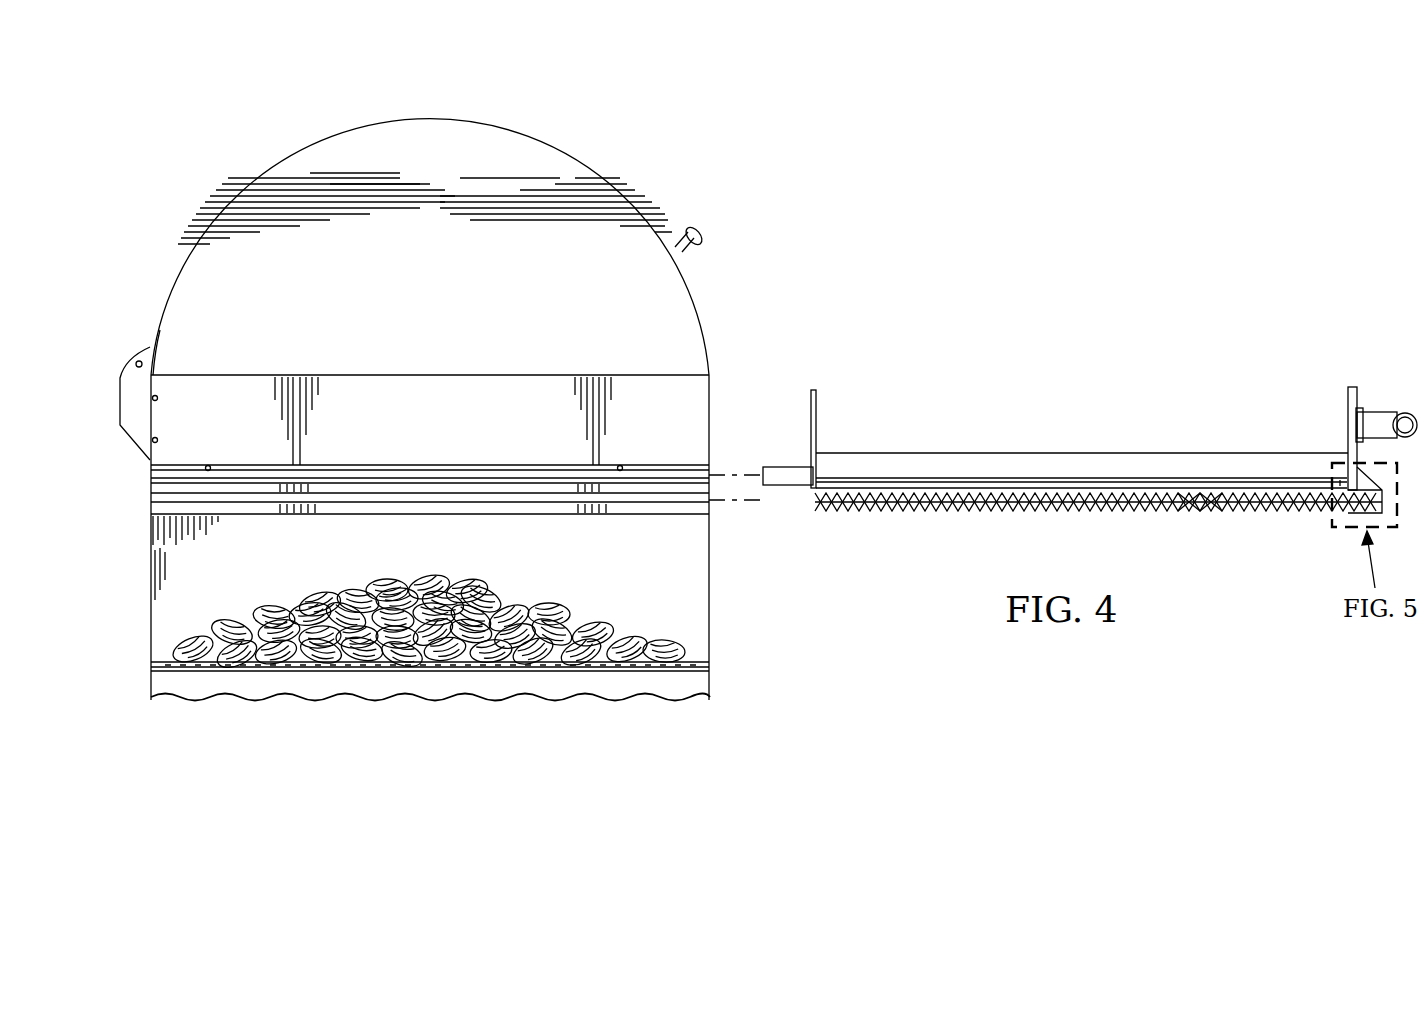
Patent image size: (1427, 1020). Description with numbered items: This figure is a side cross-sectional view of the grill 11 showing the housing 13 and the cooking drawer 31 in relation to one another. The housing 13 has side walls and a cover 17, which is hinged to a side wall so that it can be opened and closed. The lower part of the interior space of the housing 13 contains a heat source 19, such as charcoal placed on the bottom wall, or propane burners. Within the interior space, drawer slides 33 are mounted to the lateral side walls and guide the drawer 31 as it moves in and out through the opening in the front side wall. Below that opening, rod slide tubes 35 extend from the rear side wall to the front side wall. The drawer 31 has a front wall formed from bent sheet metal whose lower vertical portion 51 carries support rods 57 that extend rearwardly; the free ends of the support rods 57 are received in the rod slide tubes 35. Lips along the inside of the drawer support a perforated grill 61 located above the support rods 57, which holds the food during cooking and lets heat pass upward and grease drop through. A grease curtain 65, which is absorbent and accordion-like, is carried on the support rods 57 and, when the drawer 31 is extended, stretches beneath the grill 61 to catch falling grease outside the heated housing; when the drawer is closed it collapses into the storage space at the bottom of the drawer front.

The grill 11 is at (936, 192).
The housing 13 is at (710, 577).
The cover 17 is at (253, 167).
The heat source 19 is at (505, 602).
The drawer 31 is at (1355, 388).
The drawer slides 33 is at (440, 466).
The rod slide tubes 35 is at (378, 506).
The lower vertical portion 51 is at (268, 700).
The support rods 57 is at (1264, 509).
The grill 61 is at (1112, 480).
The grease curtain 65 is at (1198, 509).